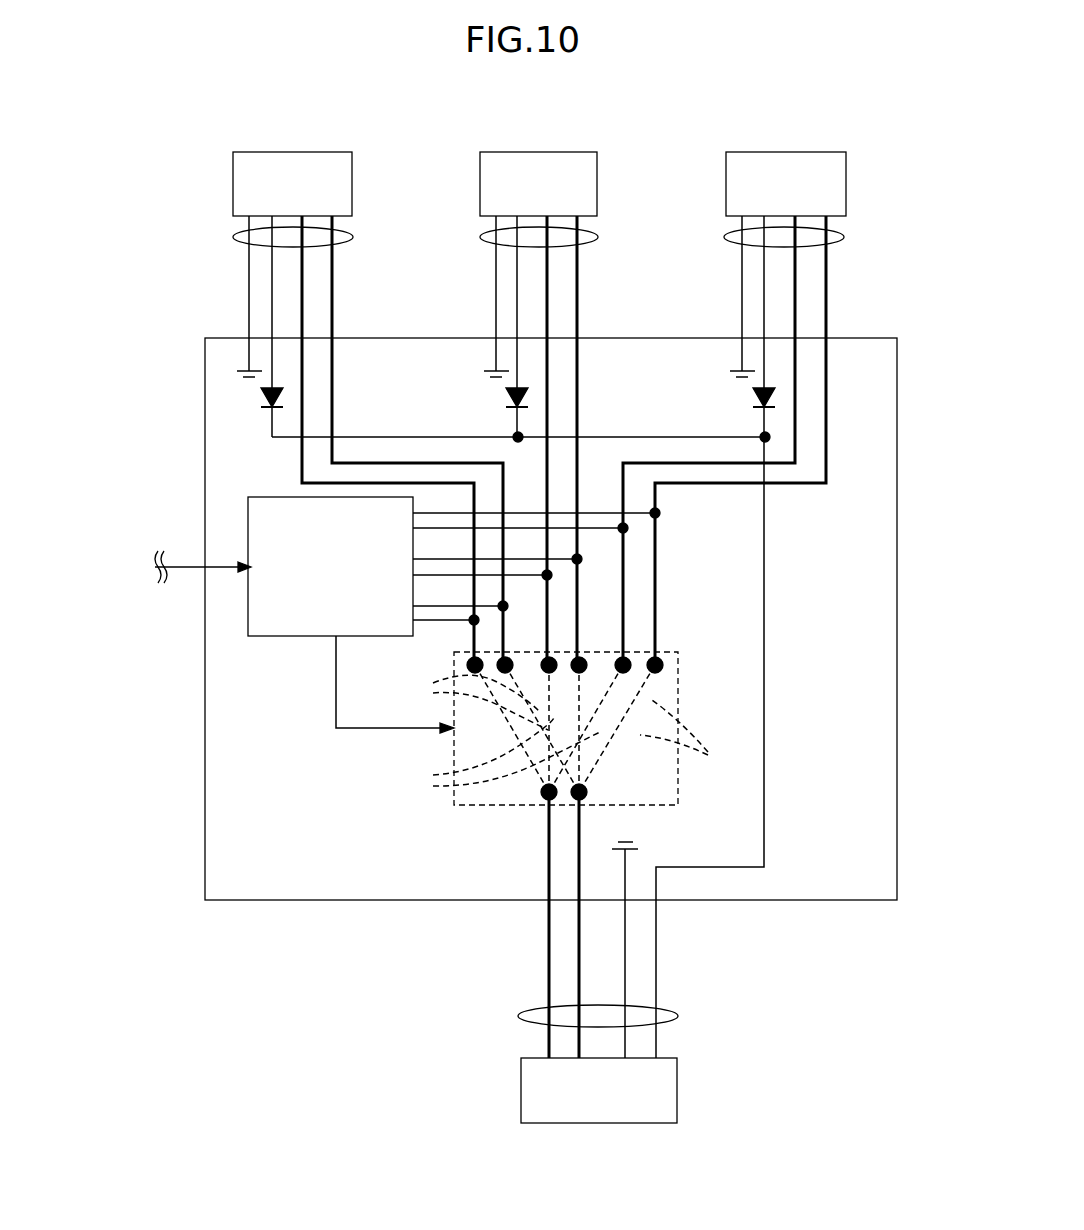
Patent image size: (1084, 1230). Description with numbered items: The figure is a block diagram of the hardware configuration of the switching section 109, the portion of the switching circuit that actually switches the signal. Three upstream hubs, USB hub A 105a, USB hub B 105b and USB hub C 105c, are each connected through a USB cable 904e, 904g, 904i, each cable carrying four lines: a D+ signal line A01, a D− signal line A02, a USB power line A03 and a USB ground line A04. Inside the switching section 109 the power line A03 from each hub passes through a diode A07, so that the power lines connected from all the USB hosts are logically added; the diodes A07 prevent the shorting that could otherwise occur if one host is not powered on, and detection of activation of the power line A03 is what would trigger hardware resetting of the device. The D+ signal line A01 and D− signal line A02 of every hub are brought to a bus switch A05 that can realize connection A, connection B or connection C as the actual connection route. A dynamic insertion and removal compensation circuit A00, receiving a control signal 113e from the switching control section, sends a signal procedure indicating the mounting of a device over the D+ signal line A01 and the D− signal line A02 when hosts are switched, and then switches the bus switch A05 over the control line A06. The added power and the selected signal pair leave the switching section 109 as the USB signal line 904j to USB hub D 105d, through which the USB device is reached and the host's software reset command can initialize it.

The switching section 109 is at (782, 900).
The USB hub A 105a is at (283, 151).
The USB hub B 105b is at (530, 151).
The USB hub C 105c is at (797, 151).
The USB hub D 105d is at (677, 1087).
The USB cable 904e is at (350, 237).
The USB cable 904g is at (597, 237).
The USB cable 904i is at (845, 237).
The USB signal line 904j is at (519, 1014).
The D+ signal line A01 is at (332, 250).
The D− signal line A02 is at (302, 282).
The USB power line A03 is at (273, 262).
The USB ground line A04 is at (250, 292).
The diode A07 is at (266, 400).
The dynamic insertion and removal compensation circuit A00 is at (300, 637).
The connection control line A06 is at (340, 731).
The bus switch A05 is at (492, 808).
The detection result signal 113e is at (182, 569).